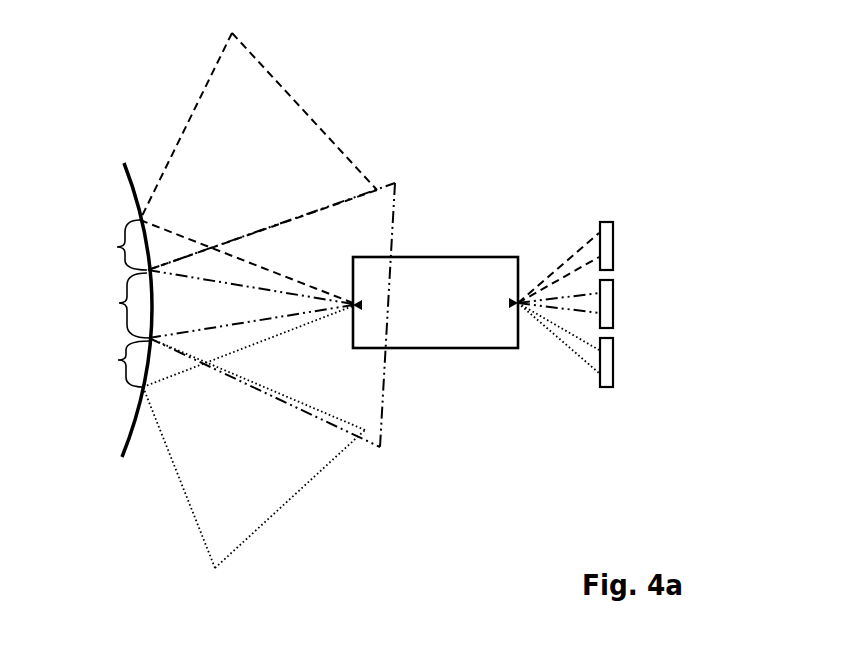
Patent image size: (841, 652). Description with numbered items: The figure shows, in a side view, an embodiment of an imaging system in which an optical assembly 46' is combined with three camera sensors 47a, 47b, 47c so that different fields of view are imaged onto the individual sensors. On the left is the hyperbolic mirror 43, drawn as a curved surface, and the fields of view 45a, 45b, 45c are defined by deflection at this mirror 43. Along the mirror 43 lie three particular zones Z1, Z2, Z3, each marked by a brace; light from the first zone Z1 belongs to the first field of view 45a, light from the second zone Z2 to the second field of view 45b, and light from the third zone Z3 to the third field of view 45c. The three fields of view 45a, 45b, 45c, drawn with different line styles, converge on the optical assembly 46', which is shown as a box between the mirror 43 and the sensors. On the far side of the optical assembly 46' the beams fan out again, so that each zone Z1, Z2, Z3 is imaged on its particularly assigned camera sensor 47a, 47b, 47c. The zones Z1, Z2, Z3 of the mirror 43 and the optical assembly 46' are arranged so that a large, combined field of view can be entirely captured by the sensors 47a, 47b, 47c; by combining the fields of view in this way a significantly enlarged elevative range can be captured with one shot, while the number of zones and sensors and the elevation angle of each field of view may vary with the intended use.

The hyperbolic mirror 43 is at (121, 172).
The field of view 45a is at (278, 110).
The field of view 45b is at (373, 392).
The field of view 45c is at (257, 515).
The optical assembly 46' is at (444, 264).
The camera sensor 47a is at (610, 232).
The camera sensor 47b is at (610, 302).
The camera sensor 47c is at (610, 370).
The zone Z1 is at (116, 247).
The zone Z2 is at (117, 305).
The zone Z3 is at (117, 364).